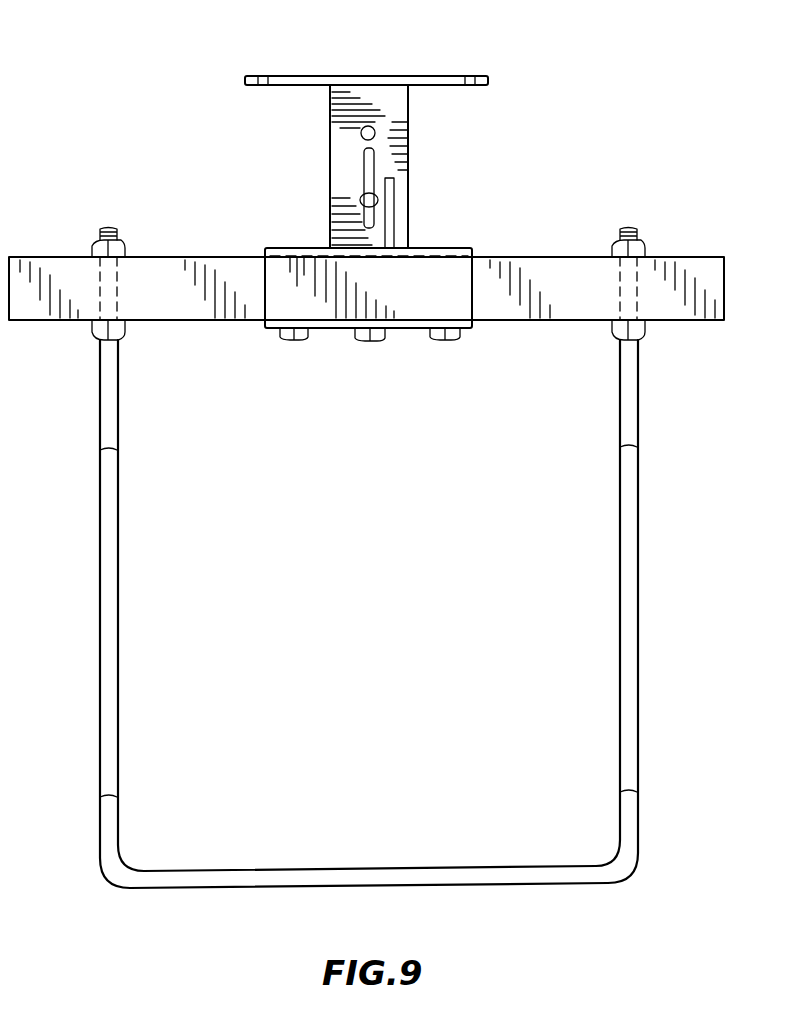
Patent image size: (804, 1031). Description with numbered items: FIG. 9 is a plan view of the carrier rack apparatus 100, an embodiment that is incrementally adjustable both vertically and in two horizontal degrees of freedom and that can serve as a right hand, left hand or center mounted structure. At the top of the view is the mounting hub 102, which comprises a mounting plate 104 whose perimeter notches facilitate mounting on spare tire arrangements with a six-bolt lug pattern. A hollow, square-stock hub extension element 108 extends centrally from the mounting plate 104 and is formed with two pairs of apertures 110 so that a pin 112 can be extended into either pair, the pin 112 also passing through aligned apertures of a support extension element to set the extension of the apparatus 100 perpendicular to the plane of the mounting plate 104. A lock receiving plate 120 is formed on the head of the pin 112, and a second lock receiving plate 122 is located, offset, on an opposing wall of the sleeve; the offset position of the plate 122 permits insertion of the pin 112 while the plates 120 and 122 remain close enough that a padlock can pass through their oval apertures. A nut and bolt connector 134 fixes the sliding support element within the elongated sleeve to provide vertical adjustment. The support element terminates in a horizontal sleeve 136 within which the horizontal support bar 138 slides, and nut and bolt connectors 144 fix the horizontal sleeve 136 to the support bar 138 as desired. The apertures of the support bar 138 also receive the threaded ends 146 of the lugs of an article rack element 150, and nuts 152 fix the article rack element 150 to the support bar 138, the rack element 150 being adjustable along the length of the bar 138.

The carrier rack apparatus 100 is at (673, 515).
The mounting hub 102 is at (437, 105).
The mounting plate 104 is at (445, 75).
The hub extension element 108 is at (330, 126).
The apertures 110 is at (378, 135).
The pin 112 is at (360, 200).
The lock receiving plate 120 is at (362, 158).
The lock receiving plate 122 is at (392, 210).
The nut and bolt connector 134 is at (372, 339).
The horizontal sleeve 136 is at (460, 300).
The horizontal support bar 138 is at (560, 265).
The nut and bolt connectors 144 is at (290, 339).
The threaded ends 146 is at (108, 228).
The article rack element 150 is at (95, 622).
The nuts 152 is at (128, 248).